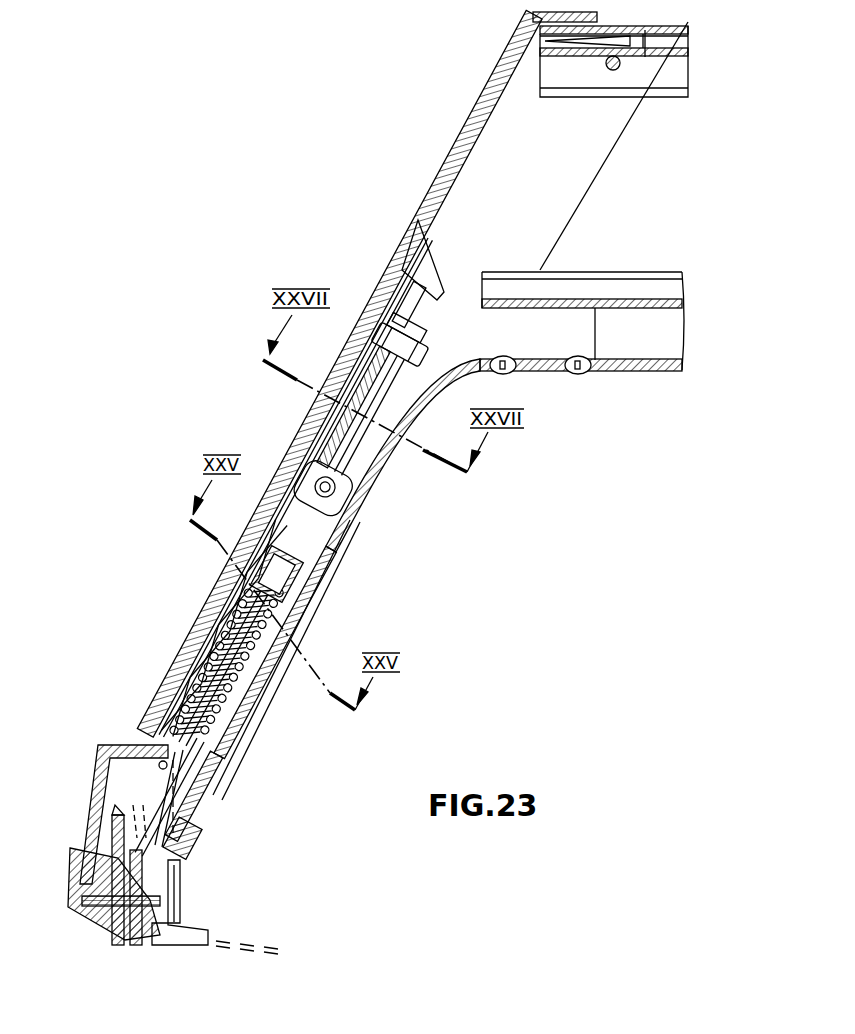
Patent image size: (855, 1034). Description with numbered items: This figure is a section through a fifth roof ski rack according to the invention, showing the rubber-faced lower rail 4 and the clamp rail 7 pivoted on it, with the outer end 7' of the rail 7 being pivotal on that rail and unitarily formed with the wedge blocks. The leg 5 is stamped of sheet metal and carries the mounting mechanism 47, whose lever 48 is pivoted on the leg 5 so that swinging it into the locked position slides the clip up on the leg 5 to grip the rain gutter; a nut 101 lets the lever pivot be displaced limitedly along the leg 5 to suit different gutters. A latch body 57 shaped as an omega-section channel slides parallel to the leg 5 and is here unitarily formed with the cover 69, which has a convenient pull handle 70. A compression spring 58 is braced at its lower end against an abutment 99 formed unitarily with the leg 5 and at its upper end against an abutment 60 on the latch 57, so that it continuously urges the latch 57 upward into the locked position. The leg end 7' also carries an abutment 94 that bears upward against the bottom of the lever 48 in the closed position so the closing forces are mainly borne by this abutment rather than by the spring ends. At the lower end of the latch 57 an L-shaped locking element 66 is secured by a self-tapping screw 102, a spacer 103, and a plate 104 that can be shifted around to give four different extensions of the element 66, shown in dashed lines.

The lower rail 4 is at (647, 343).
The leg 5 is at (362, 500).
The clamp rail 7 is at (614, 84).
The outer end of the rail 7' is at (613, 108).
The mounting mechanism 47 is at (434, 310).
The lever 48 is at (388, 297).
The latch body 57 is at (243, 752).
The compression spring 58 is at (265, 707).
The abutment 60 is at (333, 568).
The L-shaped locking element 66 is at (188, 952).
The cover 69 is at (209, 632).
The pull handle 70 is at (110, 745).
The abutment 94 is at (368, 540).
The abutment 99 is at (228, 772).
The nut 101 is at (431, 353).
The self-tapping screw 102 is at (95, 912).
The spacer 103 is at (147, 942).
The plate 104 is at (186, 870).